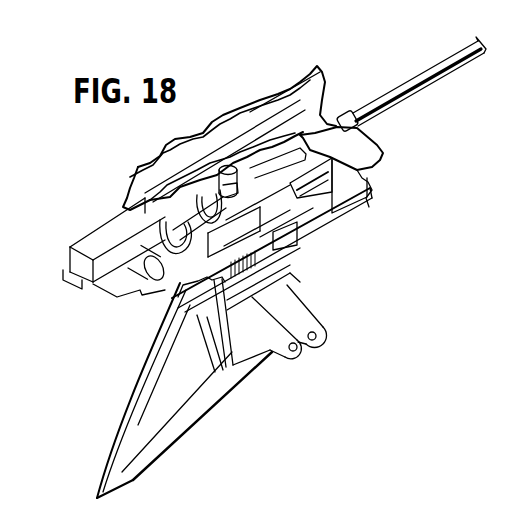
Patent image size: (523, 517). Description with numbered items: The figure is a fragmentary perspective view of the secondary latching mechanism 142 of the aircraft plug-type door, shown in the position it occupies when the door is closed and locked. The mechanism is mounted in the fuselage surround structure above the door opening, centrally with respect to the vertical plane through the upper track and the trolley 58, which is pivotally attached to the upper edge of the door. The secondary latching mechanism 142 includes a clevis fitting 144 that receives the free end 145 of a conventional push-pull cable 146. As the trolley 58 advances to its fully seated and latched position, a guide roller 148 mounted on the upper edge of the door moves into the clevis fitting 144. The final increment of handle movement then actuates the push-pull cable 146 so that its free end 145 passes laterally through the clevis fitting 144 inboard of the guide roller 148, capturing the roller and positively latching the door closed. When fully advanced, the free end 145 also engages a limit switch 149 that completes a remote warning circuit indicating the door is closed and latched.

The trolley 58 is at (200, 403).
The secondary latching mechanism 142 is at (270, 85).
The clevis fitting 144 is at (300, 130).
The free end 145 is at (368, 207).
The push-pull cable 146 is at (427, 77).
The guide roller 148 is at (223, 163).
The limit switch 149 is at (297, 237).